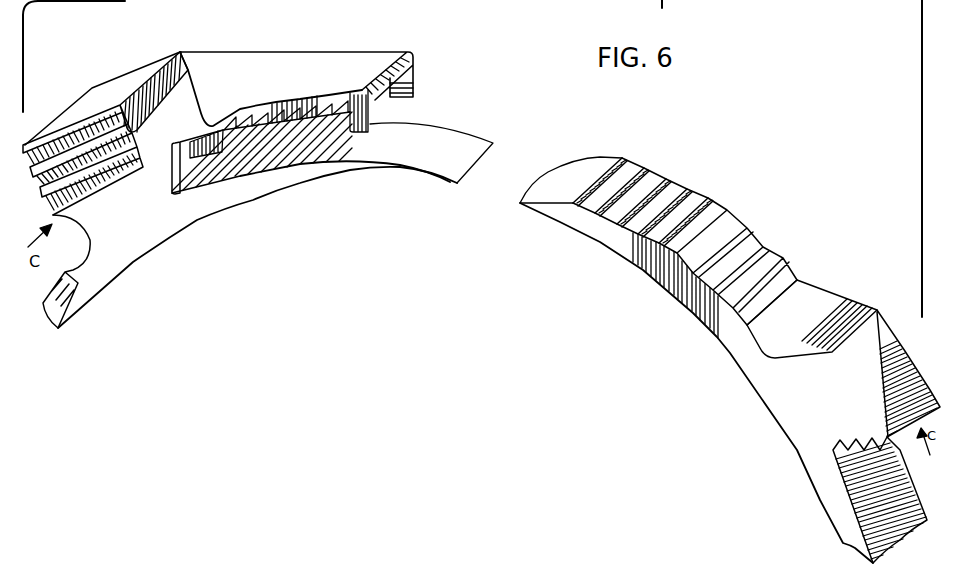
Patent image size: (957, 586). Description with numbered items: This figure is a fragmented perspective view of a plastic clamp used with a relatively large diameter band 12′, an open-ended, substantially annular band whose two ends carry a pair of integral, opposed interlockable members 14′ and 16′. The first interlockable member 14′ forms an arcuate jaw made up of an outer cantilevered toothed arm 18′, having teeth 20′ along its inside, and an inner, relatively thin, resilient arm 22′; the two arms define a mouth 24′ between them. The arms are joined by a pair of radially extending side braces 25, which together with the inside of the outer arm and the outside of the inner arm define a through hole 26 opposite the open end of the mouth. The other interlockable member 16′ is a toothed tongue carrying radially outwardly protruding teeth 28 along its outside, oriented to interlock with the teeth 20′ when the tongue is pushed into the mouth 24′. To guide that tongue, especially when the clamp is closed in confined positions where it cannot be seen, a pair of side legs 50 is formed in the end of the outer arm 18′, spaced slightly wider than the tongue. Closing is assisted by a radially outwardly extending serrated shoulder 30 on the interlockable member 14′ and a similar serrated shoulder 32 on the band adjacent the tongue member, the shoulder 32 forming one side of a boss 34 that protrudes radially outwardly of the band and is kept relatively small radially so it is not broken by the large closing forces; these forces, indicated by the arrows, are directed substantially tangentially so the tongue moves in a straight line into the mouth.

The band 12′ is at (65, 327).
The first interlockable member 14′ is at (378, 47).
The other interlockable member 16′ is at (742, 214).
The outer cantilevered toothed arm 18′ is at (301, 70).
The teeth 20′ is at (266, 125).
The inner resilient arm 22′ is at (310, 168).
The mouth 24′ is at (400, 109).
The side braces 25 is at (133, 227).
The through hole 26 is at (186, 185).
The teeth 28 is at (688, 200).
The serrated shoulder 30 is at (63, 167).
The serrated shoulder 32 is at (880, 500).
The boss 34 is at (832, 393).
The side legs 50 is at (403, 78).